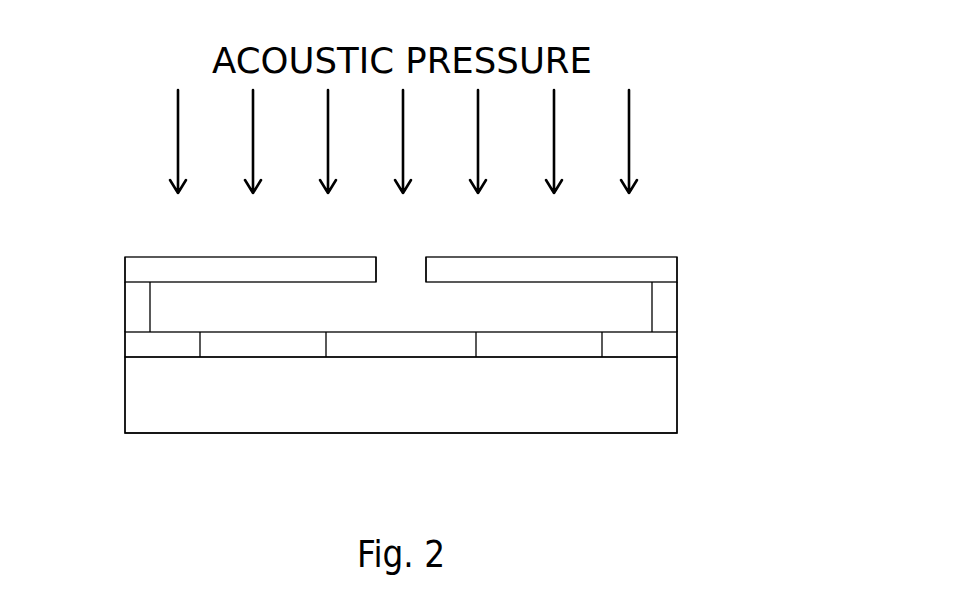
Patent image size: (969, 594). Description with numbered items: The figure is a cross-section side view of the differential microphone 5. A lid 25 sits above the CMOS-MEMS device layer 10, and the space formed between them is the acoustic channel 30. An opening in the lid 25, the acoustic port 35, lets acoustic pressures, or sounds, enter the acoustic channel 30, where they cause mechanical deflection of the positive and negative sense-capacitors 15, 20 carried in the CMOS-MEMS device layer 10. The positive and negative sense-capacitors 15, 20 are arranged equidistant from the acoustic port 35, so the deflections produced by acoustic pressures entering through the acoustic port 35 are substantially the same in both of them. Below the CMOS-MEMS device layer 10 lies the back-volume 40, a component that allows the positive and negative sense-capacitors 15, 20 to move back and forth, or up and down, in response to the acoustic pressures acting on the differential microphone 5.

The differential microphone 5 is at (140, 196).
The CMOS-MEMS device layer 10 is at (122, 345).
The positive sense-capacitor 15 is at (257, 353).
The negative sense-capacitor 20 is at (553, 352).
The lid 25 is at (677, 266).
The acoustic channel 30 is at (628, 297).
The acoustic port 35 is at (402, 252).
The back-volume 40 is at (343, 433).